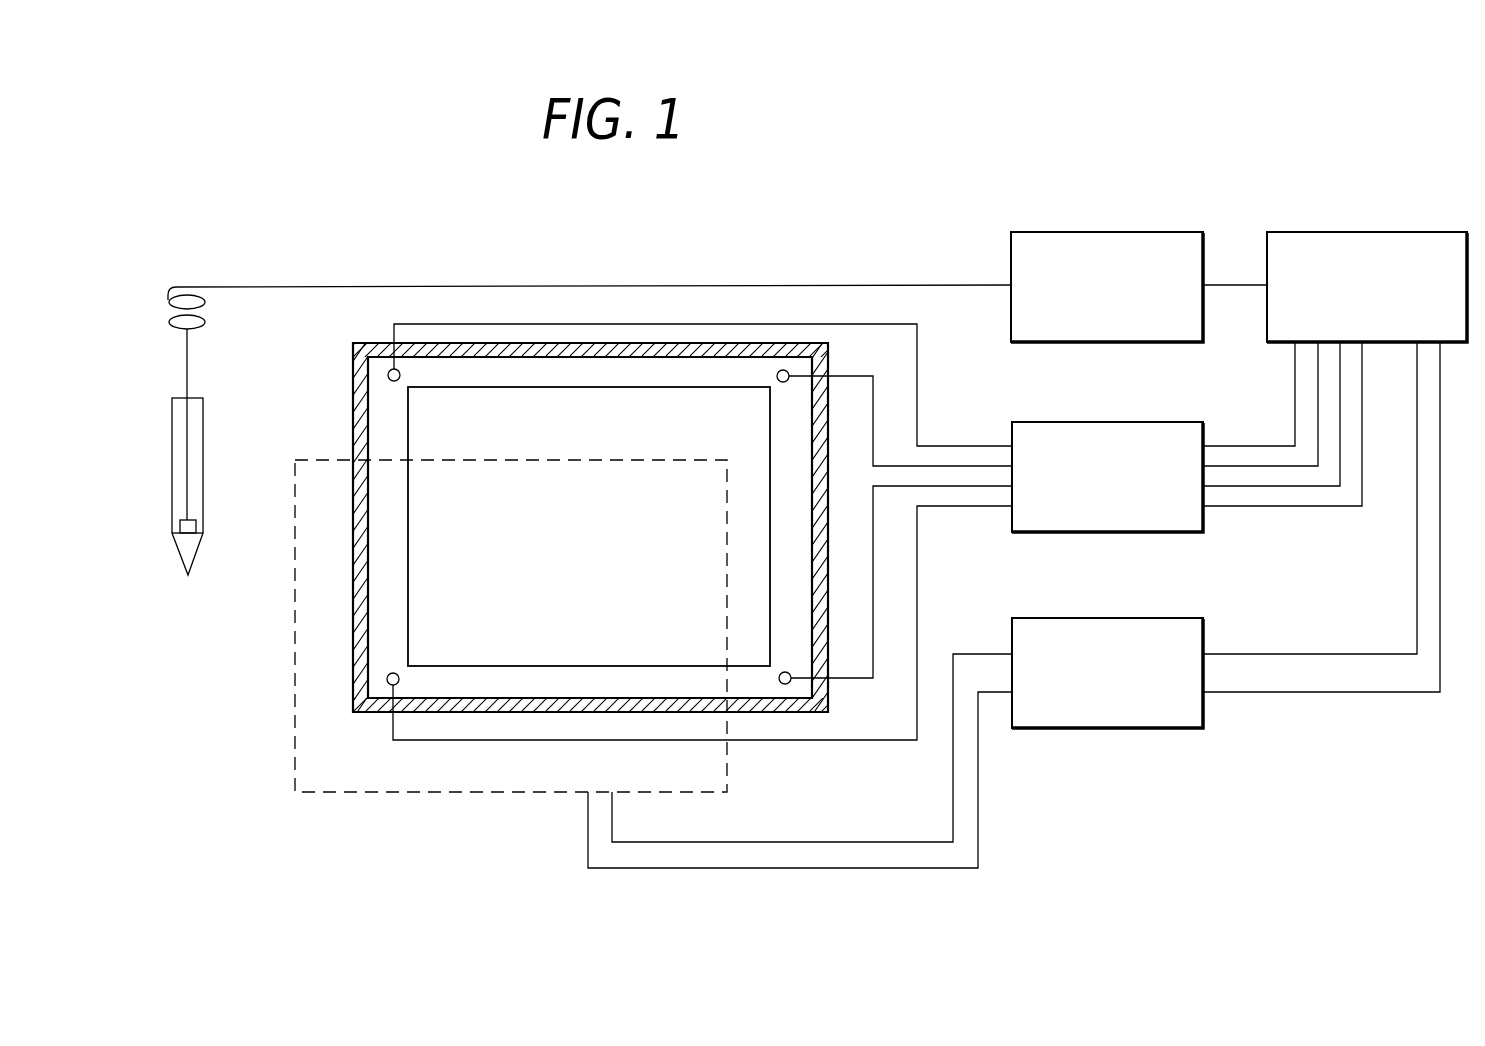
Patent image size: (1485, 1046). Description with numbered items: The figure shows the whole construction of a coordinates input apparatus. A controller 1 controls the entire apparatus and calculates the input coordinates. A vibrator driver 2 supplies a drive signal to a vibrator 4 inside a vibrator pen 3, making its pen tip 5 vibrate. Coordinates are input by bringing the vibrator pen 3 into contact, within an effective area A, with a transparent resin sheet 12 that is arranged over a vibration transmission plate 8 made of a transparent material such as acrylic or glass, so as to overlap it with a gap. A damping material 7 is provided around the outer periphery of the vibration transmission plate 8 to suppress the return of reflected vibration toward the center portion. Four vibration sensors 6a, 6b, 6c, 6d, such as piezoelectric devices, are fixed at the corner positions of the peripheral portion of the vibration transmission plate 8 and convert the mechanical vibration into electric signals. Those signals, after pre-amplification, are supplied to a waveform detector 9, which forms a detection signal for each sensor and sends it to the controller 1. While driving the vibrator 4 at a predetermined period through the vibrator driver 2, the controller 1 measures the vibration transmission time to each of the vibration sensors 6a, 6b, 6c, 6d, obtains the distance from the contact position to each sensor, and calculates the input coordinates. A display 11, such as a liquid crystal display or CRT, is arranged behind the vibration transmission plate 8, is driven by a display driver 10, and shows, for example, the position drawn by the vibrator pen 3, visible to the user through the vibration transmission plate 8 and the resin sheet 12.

The controller 1 is at (1395, 232).
The vibrator driver 2 is at (1142, 232).
The vibrator pen 3 is at (203, 420).
The vibrator 4 is at (190, 525).
The pen tip 5 is at (197, 558).
The vibration sensor 6a is at (388, 376).
The vibration sensor 6b is at (805, 358).
The vibration sensor 6c is at (386, 680).
The vibration sensor 6d is at (792, 684).
The damping material 7 is at (688, 345).
The vibration transmission plate 8 is at (483, 365).
The waveform detector 9 is at (1137, 422).
The display driver 10 is at (1130, 618).
The display 11 is at (527, 793).
The resin sheet 12 is at (365, 343).
The effective area A is at (450, 665).